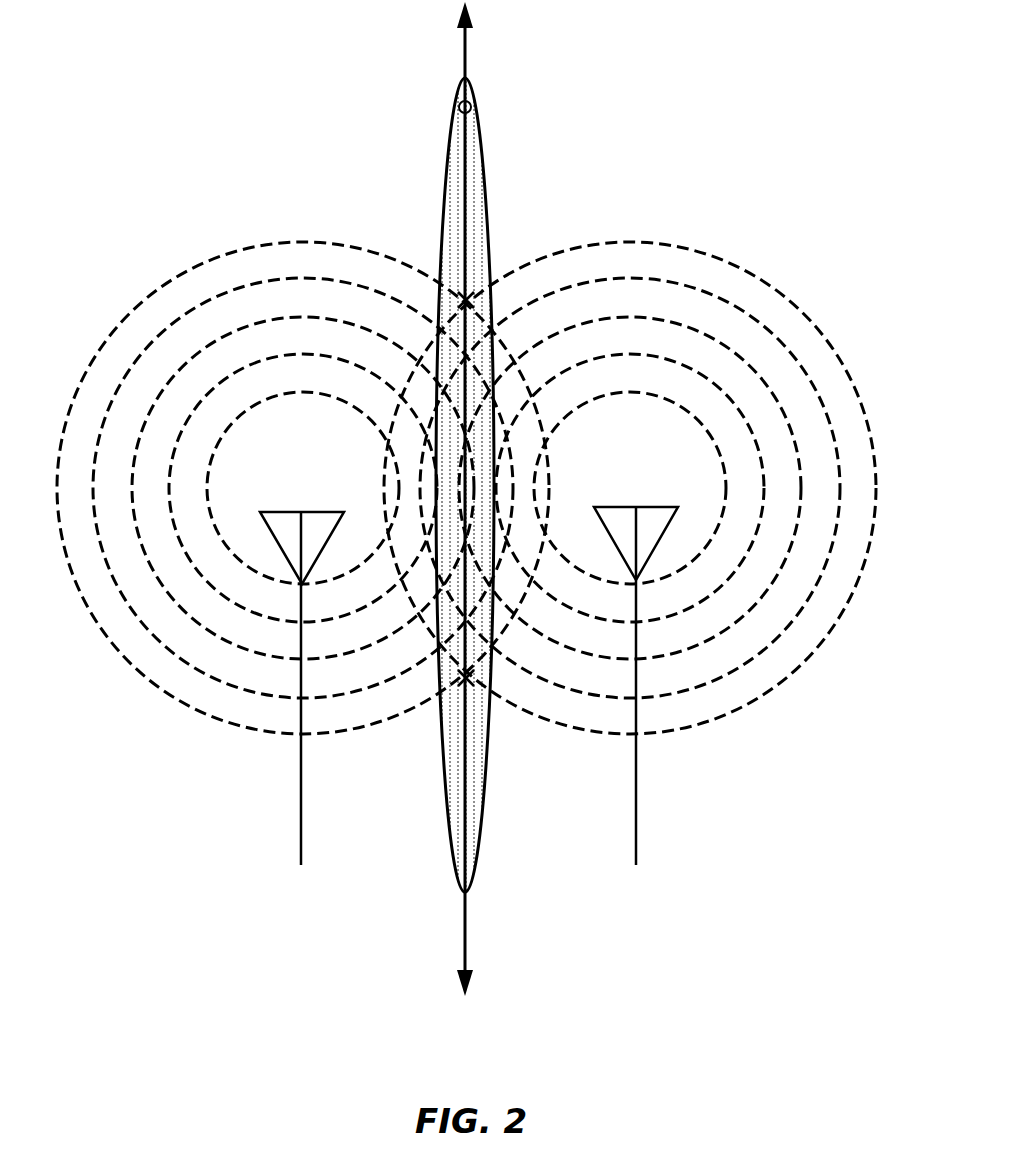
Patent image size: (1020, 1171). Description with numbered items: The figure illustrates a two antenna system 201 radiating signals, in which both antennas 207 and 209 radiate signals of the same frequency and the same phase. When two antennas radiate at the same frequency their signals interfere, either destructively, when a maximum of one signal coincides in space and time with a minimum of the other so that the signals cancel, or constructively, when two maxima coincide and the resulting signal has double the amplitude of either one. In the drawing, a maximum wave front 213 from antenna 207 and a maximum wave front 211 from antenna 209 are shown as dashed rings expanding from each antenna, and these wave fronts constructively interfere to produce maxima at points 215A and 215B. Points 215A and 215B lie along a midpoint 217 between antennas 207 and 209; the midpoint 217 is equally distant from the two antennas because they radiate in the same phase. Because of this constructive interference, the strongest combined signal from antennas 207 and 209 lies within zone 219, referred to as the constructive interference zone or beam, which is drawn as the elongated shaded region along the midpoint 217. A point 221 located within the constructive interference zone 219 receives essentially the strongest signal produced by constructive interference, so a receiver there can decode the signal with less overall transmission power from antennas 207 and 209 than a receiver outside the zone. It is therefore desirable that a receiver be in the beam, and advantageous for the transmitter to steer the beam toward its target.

The two antenna system 201 is at (819, 130).
The antenna 207 is at (300, 815).
The antenna 209 is at (636, 815).
The maximum wave front 211 is at (804, 664).
The maximum wave front 213 is at (131, 664).
The point 215A is at (465, 300).
The point 215B is at (466, 678).
The midpoint 217 is at (468, 180).
The constructive interference zone 219 is at (444, 735).
The point 221 is at (459, 104).